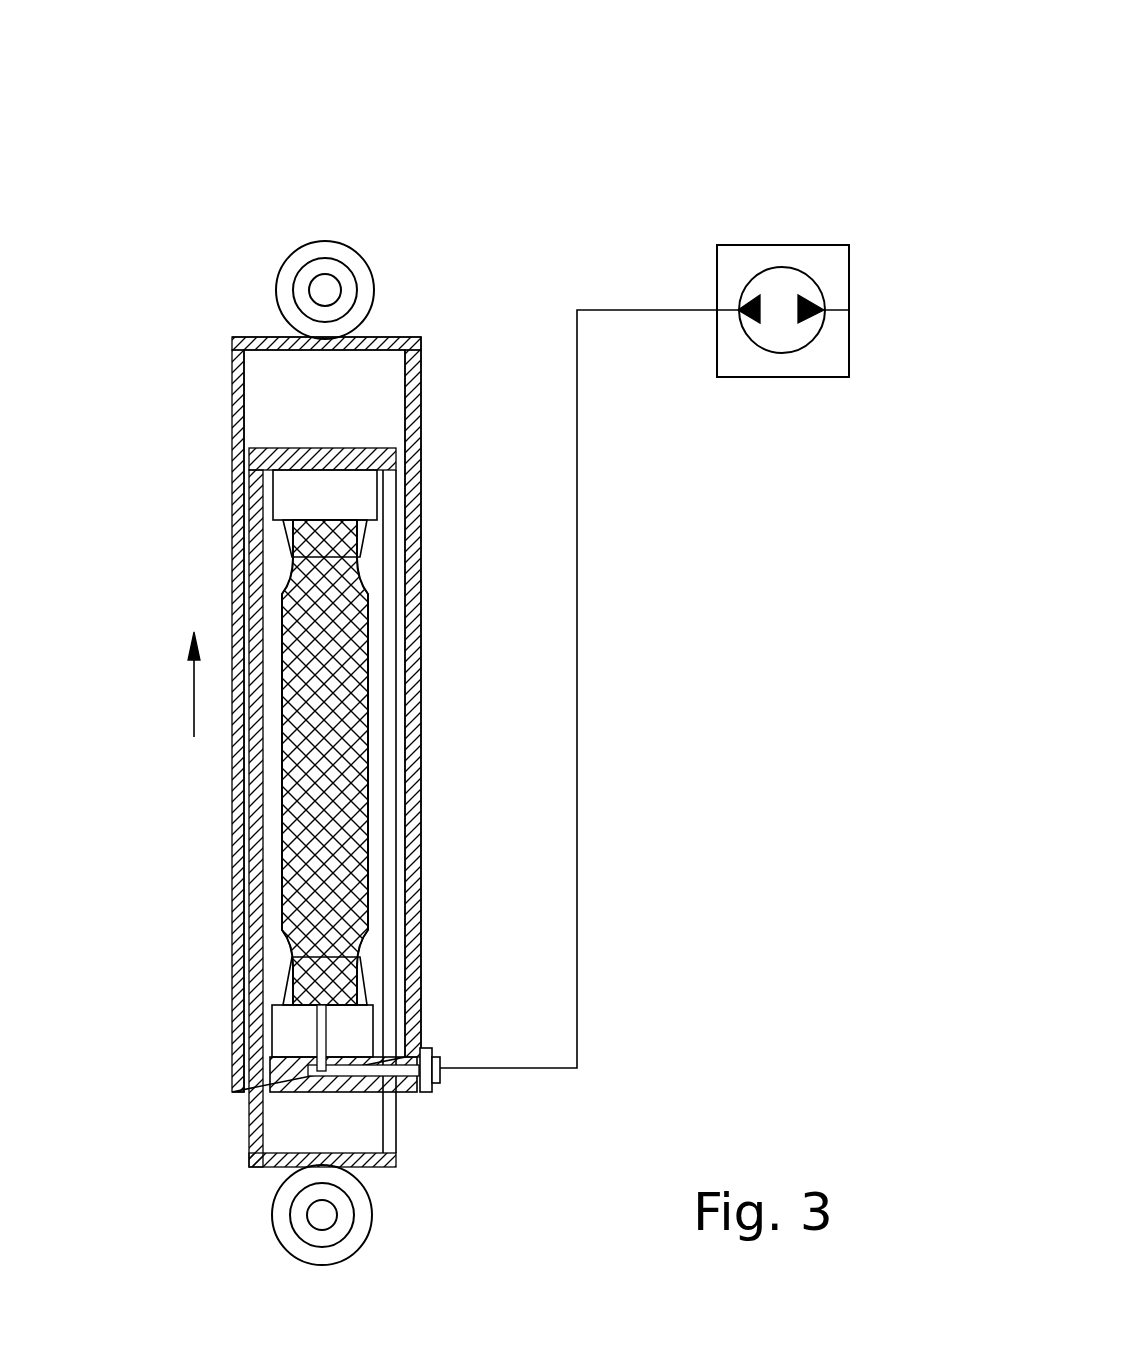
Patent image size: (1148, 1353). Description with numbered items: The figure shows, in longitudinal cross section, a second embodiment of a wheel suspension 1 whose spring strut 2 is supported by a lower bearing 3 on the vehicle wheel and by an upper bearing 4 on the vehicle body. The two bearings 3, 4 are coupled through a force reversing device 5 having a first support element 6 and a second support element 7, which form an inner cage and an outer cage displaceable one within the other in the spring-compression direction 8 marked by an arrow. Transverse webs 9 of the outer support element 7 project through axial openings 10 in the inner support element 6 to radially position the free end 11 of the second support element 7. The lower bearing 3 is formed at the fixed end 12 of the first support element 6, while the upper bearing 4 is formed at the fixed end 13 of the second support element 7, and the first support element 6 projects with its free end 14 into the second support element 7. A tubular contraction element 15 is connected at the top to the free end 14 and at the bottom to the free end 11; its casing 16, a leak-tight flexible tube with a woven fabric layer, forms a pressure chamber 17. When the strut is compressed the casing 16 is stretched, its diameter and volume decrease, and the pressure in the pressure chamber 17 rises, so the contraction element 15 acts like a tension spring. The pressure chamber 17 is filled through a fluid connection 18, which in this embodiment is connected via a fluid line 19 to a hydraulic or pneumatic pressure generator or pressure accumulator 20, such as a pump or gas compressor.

The wheel suspension 1 is at (731, 97).
The spring strut 2 is at (452, 490).
The lower bearing 3 is at (325, 1222).
The upper bearing 4 is at (330, 287).
The force reversing device 5 is at (433, 792).
The first support element 6 is at (258, 823).
The second support element 7 is at (408, 622).
The spring-compression direction 8 is at (194, 688).
The transverse webs 9 is at (373, 1097).
The axial openings 10 is at (389, 940).
The free end of the second support element 11 is at (283, 1095).
The fixed end of the first support element 12 is at (265, 1168).
The fixed end of the second support element 13 is at (388, 337).
The free end of the first support element 14 is at (287, 448).
The contraction element 15 is at (269, 605).
The casing 16 is at (366, 748).
The pressure chamber 17 is at (363, 830).
The fluid connection 18 is at (424, 1095).
The fluid line 19 is at (580, 607).
The pressure generator or pressure accumulator 20 is at (826, 363).